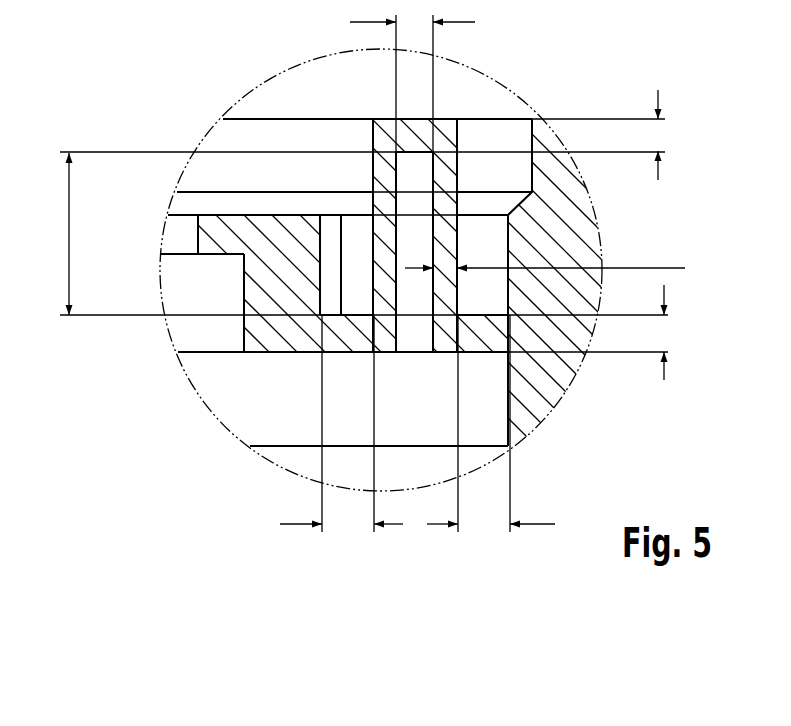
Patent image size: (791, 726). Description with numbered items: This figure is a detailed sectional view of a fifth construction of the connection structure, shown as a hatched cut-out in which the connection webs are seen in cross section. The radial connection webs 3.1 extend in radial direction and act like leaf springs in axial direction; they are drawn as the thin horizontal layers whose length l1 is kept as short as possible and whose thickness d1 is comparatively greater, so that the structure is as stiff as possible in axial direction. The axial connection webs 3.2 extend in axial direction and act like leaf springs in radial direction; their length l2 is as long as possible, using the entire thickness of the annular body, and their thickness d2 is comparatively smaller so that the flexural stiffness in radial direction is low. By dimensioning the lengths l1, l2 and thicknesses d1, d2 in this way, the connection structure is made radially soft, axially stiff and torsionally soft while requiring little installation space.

The radial connection web 3.1 is at (410, 142).
The axial connection web 3.2 is at (442, 198).
The length of the radial connection webs l1 is at (417, 270).
The length of the axial connection webs l2 is at (223, 233).
The thickness of the radial connection webs d1 is at (500, 235).
The thickness of the axial connection webs d2 is at (557, 267).